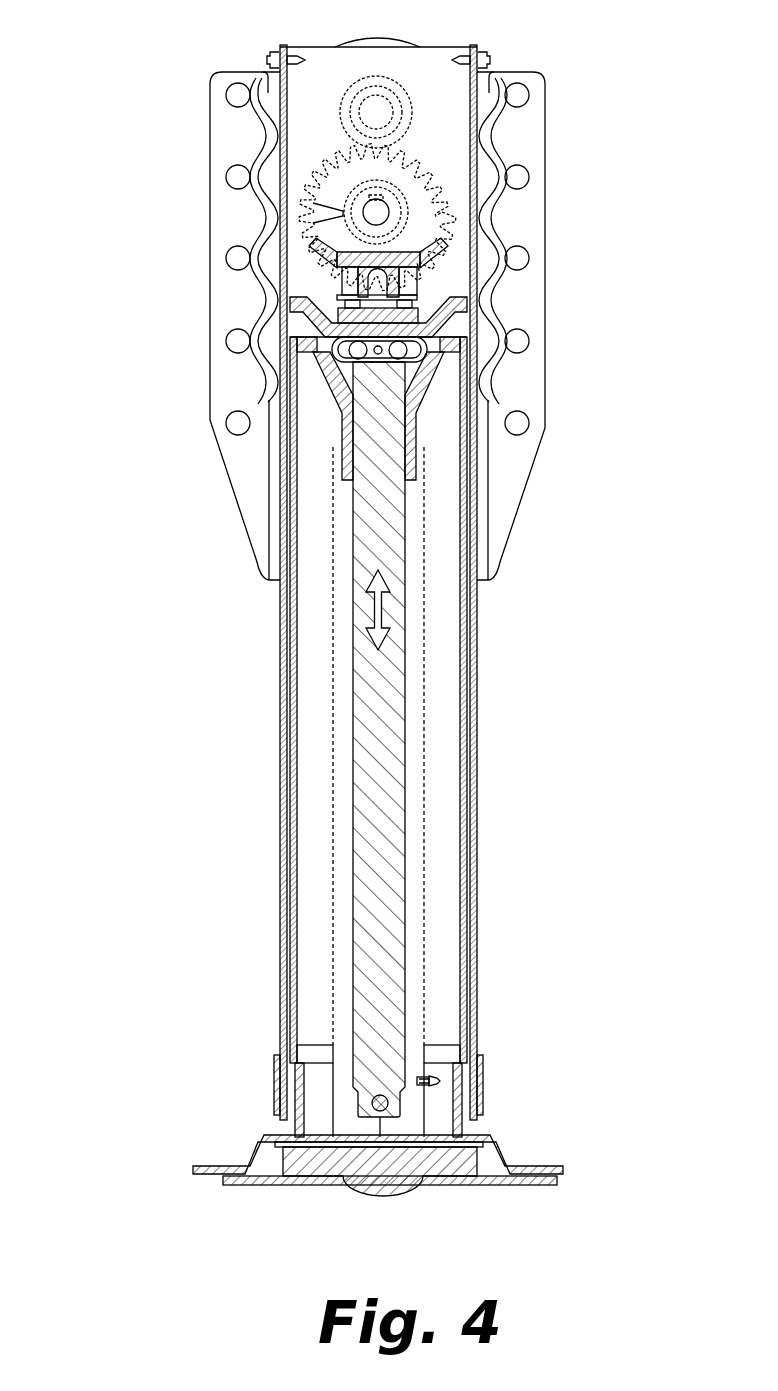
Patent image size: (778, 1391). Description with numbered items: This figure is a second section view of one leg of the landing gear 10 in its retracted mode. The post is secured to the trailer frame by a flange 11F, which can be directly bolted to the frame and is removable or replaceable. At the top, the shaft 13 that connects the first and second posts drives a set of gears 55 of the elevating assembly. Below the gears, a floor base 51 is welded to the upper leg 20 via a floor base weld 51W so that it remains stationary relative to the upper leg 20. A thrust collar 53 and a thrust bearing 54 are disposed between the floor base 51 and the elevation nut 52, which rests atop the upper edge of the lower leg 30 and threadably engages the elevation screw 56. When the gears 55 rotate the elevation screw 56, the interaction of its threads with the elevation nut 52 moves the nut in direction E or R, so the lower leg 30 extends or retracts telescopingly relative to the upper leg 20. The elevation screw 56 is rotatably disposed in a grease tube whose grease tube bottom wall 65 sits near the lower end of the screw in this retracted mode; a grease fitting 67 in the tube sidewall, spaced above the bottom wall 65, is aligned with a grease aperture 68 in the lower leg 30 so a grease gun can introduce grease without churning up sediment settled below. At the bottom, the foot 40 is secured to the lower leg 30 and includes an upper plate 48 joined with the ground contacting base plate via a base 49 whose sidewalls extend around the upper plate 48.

The landing gear 10 is at (160, 72).
The flange 11F is at (206, 222).
The shaft 13 is at (378, 110).
The set of gears 55 is at (432, 153).
The floor base weld 51W is at (447, 297).
The floor base 51 is at (463, 303).
The thrust bearing 54 is at (413, 347).
The thrust collar 53 is at (388, 376).
The elevation nut 52 is at (440, 390).
The elevation screw 56 is at (382, 738).
The upper leg 20 is at (478, 757).
The lower leg 30 is at (478, 820).
The grease fitting 67 is at (432, 1080).
The grease aperture 68 is at (478, 1083).
The foot 40 is at (535, 1160).
The upper plate 48 is at (323, 1142).
The base 49 is at (347, 1186).
The grease tube bottom wall 65 is at (406, 1147).